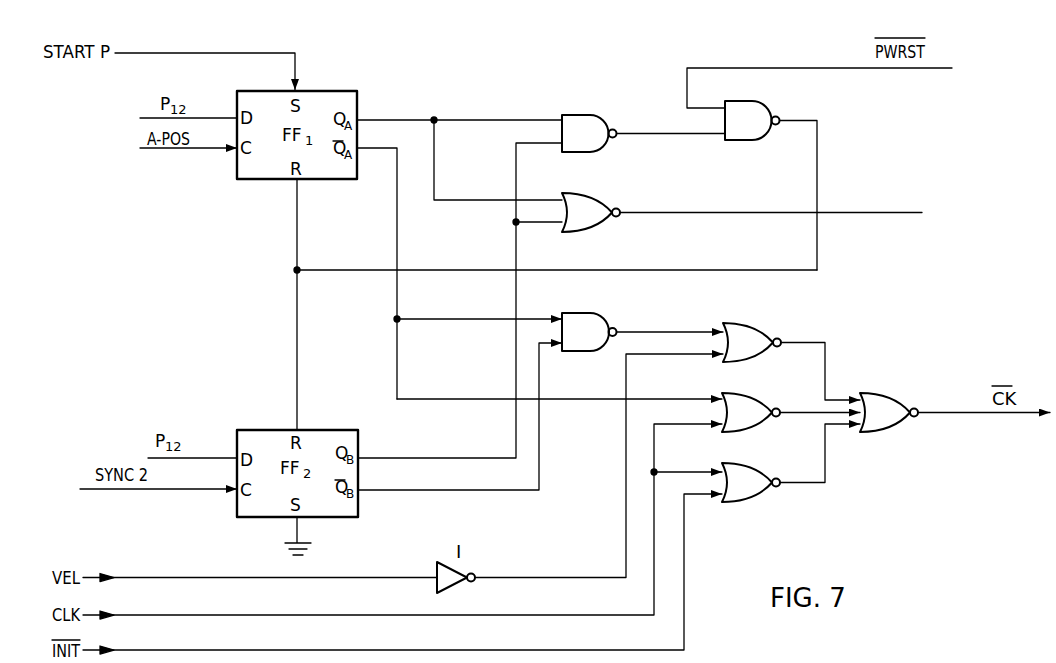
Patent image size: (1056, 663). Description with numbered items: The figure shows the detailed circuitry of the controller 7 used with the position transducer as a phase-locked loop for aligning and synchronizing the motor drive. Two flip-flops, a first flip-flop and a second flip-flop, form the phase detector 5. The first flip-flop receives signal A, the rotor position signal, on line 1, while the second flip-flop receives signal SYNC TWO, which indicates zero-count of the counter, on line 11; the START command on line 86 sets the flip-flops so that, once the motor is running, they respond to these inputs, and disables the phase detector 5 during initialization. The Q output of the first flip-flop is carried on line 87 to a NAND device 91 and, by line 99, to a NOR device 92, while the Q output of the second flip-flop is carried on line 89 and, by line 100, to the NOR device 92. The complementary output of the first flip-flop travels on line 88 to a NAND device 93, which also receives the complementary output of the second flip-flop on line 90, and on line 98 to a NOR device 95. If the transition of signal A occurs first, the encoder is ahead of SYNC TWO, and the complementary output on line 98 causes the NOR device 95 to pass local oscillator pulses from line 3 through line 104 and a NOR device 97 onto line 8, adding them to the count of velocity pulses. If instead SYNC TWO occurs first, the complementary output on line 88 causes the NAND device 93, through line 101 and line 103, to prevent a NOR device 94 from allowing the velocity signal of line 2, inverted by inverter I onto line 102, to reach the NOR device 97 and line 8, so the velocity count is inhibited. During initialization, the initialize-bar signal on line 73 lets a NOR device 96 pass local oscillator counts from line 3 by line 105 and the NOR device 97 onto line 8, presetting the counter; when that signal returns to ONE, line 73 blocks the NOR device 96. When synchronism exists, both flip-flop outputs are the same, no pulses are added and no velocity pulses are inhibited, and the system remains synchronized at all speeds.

The line 1 is at (190, 152).
The line 2 is at (196, 572).
The line 3 is at (197, 609).
The phase detector 5 is at (269, 282).
The controller 7 is at (858, 312).
The line 8 is at (955, 409).
The line 11 is at (193, 490).
The line 73 is at (203, 647).
The line 86 is at (227, 51).
The line 87 is at (412, 114).
The line 88 is at (397, 228).
The line 89 is at (516, 172).
The line 90 is at (539, 376).
The NAND device 91 is at (601, 98).
The NOR device 92 is at (605, 182).
The NAND device 93 is at (607, 301).
The NOR device 94 is at (758, 322).
The NOR device 95 is at (738, 392).
The NOR device 96 is at (752, 464).
The NOR device 97 is at (892, 392).
The line 98 is at (687, 394).
The line 99 is at (434, 163).
The line 100 is at (541, 224).
The line 101 is at (694, 326).
The line 102 is at (589, 572).
The line 103 is at (825, 357).
The line 104 is at (817, 405).
The line 105 is at (825, 467).